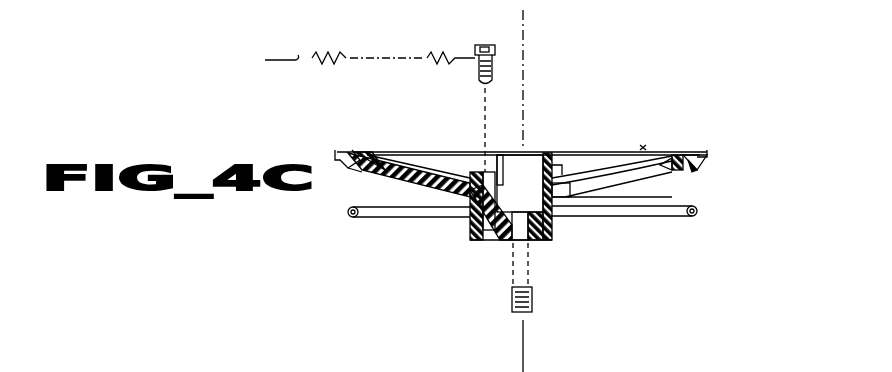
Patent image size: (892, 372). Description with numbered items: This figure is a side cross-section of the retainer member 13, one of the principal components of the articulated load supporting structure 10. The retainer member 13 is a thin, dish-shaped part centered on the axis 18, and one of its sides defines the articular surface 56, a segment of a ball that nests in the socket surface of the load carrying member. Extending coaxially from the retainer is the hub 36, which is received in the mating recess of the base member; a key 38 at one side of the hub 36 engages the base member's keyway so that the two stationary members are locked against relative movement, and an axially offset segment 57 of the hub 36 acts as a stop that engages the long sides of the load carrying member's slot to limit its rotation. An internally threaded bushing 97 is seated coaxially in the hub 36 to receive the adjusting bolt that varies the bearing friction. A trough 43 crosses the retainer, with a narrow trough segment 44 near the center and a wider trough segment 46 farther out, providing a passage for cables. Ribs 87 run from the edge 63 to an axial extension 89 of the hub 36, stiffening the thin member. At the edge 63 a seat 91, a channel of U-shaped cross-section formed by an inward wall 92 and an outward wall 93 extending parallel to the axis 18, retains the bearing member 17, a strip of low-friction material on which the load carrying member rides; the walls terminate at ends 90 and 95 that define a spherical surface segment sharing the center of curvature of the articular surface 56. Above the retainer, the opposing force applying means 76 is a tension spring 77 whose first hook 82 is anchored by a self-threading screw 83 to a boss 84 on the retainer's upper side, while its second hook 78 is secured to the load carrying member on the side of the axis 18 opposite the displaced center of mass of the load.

The articulated load supporting structure 10 is at (722, 158).
The retainer member 13 is at (688, 150).
The bearing member 17 is at (353, 222).
The axis 18 is at (523, 346).
The hub 36 is at (560, 238).
The key 38 is at (480, 240).
The trough 43 is at (635, 158).
The narrow trough segment 44 is at (575, 160).
The wider trough segment 46 is at (655, 160).
The articular surface 56 is at (397, 179).
The offset segment 57 is at (470, 210).
The edge 63 is at (712, 152).
The opposing force applying means 76 is at (337, 66).
The tension spring 77 is at (362, 58).
The second hook 78 is at (270, 59).
The first hook 82 is at (496, 60).
The self-threading screw 83 is at (487, 44).
The boss 84 is at (490, 177).
The ribs 87 is at (620, 152).
The axial extension 89 is at (553, 165).
The end 90 is at (365, 168).
The seat 91 is at (695, 168).
The inward wall 92 is at (684, 166).
The outward wall 93 is at (712, 160).
The end 95 is at (345, 160).
The internally threaded bushing 97 is at (533, 300).